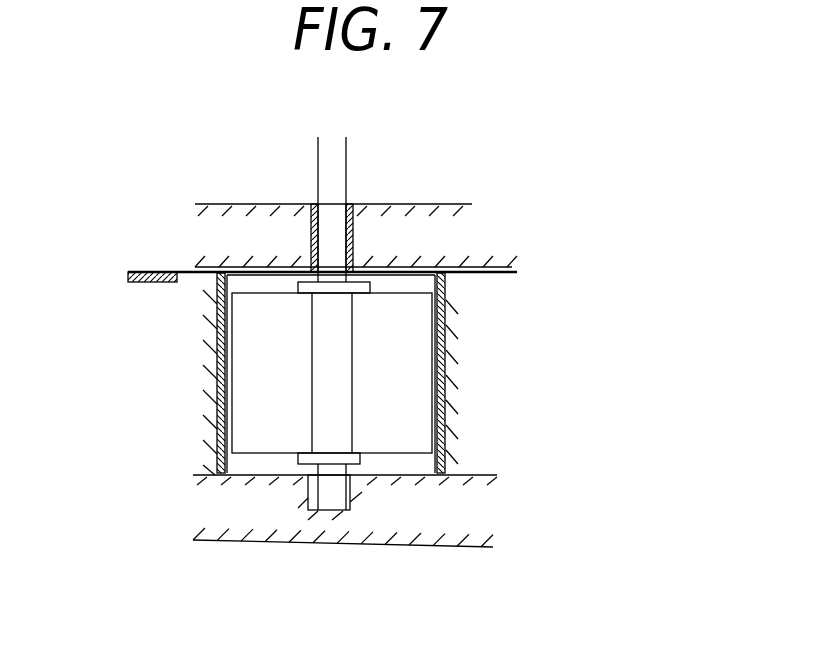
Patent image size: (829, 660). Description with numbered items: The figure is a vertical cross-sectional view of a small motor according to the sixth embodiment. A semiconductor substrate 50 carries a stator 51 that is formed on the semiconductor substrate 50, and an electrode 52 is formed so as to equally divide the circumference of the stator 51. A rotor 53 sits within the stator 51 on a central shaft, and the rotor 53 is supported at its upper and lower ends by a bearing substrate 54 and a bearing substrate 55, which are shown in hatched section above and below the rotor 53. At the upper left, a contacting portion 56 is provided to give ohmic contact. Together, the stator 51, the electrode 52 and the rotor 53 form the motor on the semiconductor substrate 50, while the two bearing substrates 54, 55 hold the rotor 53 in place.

The semiconductor substrate 50 is at (520, 382).
The stator 51 is at (447, 450).
The electrode 52 is at (458, 290).
The rotor 53 is at (420, 345).
The bearing substrate 54 is at (483, 232).
The bearing substrate 55 is at (483, 512).
The contacting portion 56 is at (148, 270).